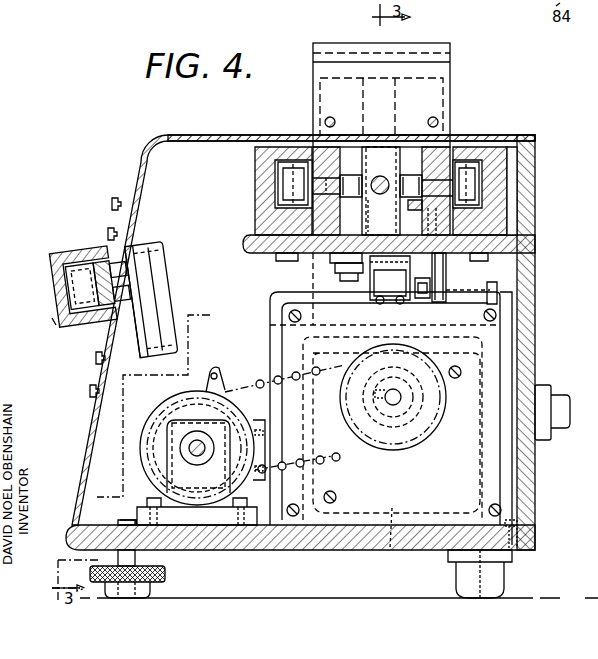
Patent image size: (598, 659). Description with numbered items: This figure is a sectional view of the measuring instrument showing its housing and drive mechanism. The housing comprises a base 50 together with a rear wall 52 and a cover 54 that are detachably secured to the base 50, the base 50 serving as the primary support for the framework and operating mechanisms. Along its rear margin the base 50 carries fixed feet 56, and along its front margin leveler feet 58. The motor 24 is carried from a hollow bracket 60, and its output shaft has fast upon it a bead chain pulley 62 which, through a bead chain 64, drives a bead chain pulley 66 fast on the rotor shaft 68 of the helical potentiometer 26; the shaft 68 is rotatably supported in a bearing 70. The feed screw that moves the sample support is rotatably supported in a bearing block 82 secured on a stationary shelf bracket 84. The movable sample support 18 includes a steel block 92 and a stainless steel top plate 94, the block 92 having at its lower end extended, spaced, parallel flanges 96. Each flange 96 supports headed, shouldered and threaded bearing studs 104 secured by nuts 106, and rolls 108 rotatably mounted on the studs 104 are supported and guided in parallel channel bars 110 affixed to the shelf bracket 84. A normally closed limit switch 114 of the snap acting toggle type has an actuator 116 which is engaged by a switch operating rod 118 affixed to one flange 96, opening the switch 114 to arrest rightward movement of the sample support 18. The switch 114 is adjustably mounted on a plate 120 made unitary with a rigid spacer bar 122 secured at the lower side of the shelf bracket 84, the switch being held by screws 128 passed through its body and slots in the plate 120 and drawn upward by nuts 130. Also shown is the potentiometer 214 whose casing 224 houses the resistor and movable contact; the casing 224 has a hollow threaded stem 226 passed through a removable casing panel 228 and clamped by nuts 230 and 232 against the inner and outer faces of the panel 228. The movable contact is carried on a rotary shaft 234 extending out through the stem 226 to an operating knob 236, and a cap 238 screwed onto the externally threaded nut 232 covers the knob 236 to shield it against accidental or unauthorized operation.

The movable sample support 18 is at (469, 93).
The motor 24 is at (390, 550).
The helical potentiometer 26 is at (228, 392).
The base 50 is at (232, 551).
The rear wall 52 is at (526, 318).
The cover 54 is at (224, 134).
The fixed feet 56 is at (504, 570).
The leveler feet 58 is at (150, 590).
The hollow bracket 60 is at (270, 360).
The bead chain pulley 62 is at (420, 428).
The bead chain 64 is at (332, 456).
The bead chain pulley 66 is at (178, 410).
The rotor shaft 68 is at (185, 444).
The bearing 70 is at (174, 464).
The bearing block 82 is at (382, 172).
The shelf bracket 84 is at (254, 254).
The steel block 92 is at (322, 97).
The stainless steel top plate 94 is at (450, 56).
The flanges 96 is at (340, 196).
The bearing studs 104 is at (426, 200).
The nuts 106 is at (414, 168).
The rolls 108 is at (470, 198).
The channel bars 110 is at (500, 178).
The limit switch 114 is at (378, 282).
The actuator 116 is at (422, 292).
The switch operating rod 118 is at (440, 275).
The plate 120 is at (345, 278).
The spacer bar 122 is at (330, 262).
The screws 128 is at (400, 352).
The nuts 130 is at (376, 252).
The potentiometer 214 is at (156, 236).
The casing 224 is at (160, 268).
The hollow threaded stem 226 is at (112, 262).
The removable casing panel 228 is at (120, 196).
The nut 230 is at (136, 292).
The nut 232 is at (103, 320).
The rotary shaft 234 is at (70, 279).
The operating knob 236 is at (62, 262).
The cap 238 is at (56, 322).